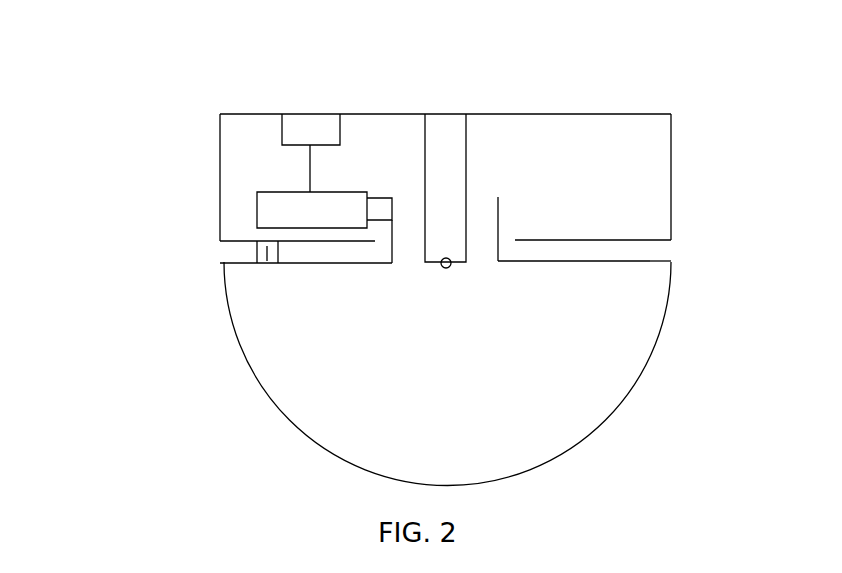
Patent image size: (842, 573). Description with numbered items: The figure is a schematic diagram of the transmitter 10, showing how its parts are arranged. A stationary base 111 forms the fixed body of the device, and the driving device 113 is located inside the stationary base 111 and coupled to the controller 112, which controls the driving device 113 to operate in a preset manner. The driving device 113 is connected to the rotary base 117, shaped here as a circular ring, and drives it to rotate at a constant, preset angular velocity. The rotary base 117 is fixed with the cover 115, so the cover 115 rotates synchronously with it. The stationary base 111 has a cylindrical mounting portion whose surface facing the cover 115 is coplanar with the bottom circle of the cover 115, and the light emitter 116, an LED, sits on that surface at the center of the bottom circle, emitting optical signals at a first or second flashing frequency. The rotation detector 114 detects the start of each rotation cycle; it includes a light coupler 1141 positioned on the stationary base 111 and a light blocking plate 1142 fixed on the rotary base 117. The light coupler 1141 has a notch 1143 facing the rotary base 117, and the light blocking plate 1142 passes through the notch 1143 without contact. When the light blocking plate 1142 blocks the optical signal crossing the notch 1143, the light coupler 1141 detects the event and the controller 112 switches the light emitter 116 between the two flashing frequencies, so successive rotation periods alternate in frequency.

The transmitter 10 is at (710, 101).
The stationary base 111 is at (671, 186).
The controller 112 is at (282, 128).
The driving device 113 is at (257, 222).
The rotation detector 114 is at (120, 228).
The light coupler 1141 is at (258, 241).
The light blocking plate 1142 is at (259, 262).
The notch 1143 is at (278, 250).
The cover 115 is at (272, 405).
The light emitter 116 is at (451, 266).
The rotary base 117 is at (640, 263).